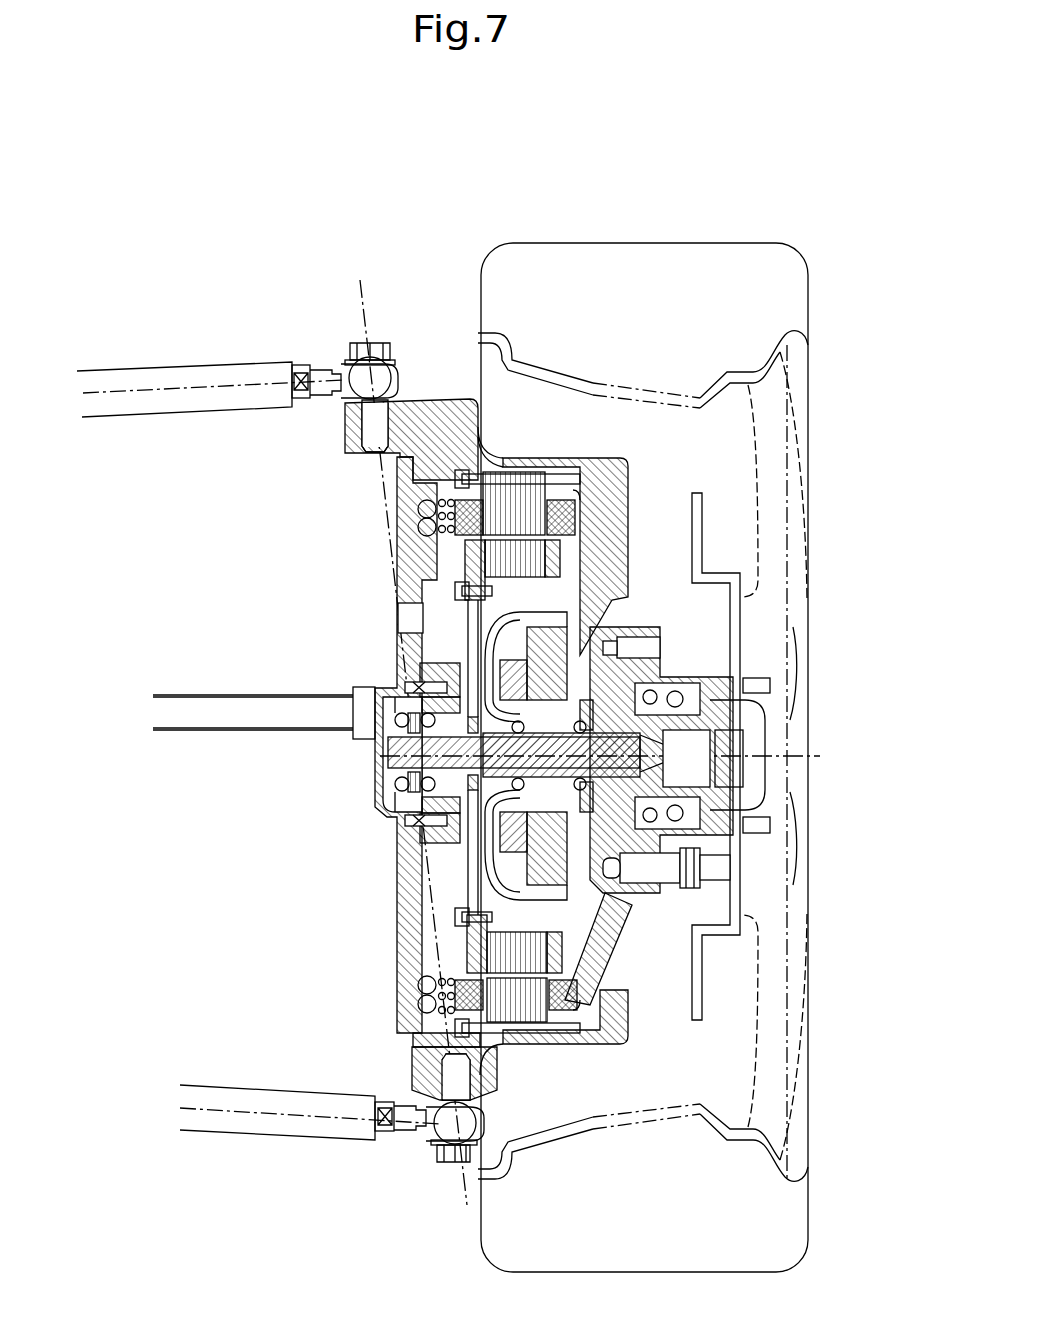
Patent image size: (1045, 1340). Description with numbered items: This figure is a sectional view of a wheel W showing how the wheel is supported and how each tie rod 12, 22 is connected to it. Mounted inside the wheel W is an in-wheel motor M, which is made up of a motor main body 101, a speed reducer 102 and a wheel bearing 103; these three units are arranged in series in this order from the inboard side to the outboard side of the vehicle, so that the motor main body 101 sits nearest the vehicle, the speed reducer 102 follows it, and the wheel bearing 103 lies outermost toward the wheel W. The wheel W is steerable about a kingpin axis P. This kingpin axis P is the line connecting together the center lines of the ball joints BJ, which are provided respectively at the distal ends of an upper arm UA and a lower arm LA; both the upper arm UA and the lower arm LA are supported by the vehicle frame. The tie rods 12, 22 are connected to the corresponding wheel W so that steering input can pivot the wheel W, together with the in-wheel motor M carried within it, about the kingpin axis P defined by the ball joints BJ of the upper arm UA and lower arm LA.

The wheel W is at (684, 242).
The upper arm UA is at (173, 377).
The lower arm LA is at (307, 1128).
The ball joint BJ is at (379, 370).
The kingpin axis P is at (380, 488).
The motor main body 101 is at (460, 556).
The in-wheel motor M is at (437, 895).
The tie rod 12 is at (240, 718).
The tie rod 22 is at (253, 764).
The speed reducer 102 is at (548, 788).
The wheel bearing 103 is at (678, 898).